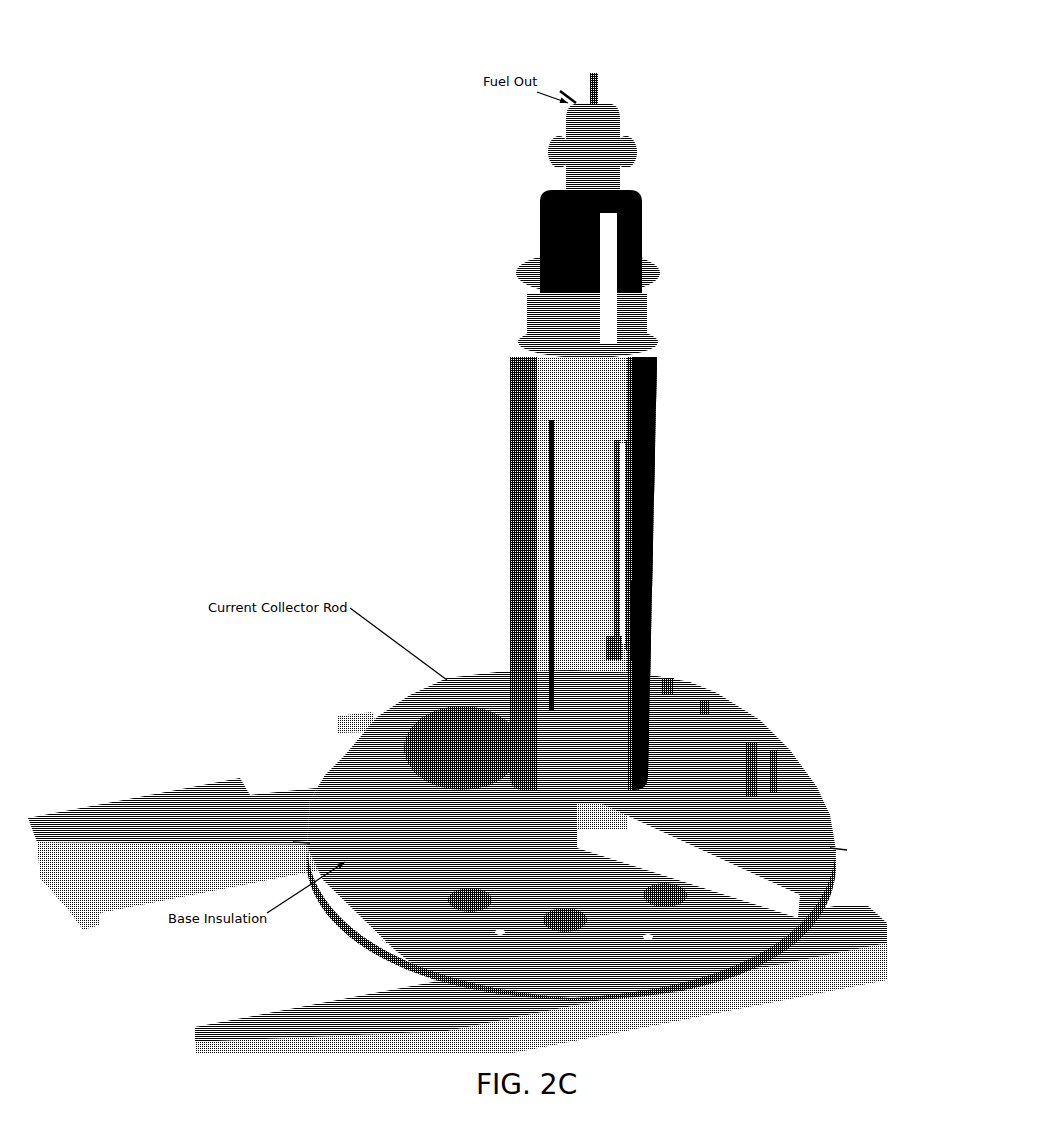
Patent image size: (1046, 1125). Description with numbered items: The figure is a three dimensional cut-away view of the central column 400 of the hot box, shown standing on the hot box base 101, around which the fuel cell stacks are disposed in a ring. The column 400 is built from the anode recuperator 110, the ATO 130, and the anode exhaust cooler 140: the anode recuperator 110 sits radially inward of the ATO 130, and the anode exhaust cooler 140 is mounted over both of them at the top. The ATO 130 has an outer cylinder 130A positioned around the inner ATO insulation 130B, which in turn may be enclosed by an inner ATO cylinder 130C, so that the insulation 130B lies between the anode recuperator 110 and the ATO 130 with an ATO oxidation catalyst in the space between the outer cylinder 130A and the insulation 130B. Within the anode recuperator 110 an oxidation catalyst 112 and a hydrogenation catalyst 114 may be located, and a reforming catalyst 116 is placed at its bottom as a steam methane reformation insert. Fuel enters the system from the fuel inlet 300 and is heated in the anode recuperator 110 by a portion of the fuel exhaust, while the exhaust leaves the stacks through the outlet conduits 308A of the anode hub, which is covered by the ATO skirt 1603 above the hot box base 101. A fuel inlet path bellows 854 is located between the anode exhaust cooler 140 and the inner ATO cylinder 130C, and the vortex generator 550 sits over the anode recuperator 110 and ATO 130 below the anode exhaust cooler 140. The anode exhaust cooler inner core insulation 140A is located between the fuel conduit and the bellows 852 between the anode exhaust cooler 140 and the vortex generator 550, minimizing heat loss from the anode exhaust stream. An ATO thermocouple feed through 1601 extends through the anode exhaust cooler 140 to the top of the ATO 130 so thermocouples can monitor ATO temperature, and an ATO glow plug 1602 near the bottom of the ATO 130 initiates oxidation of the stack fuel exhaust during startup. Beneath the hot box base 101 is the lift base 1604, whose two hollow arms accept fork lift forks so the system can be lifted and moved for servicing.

The central column 400 is at (647, 57).
The ATO thermocouple feed through 1601 is at (597, 82).
The fuel inlet 300 is at (562, 145).
The anode exhaust cooler 140 is at (640, 233).
The bellows 852 is at (525, 308).
The anode exhaust cooler inner core insulation 140A is at (612, 312).
The fuel inlet path bellows 854 is at (607, 370).
The vortex generator 550 is at (520, 345).
The outer cylinder 130A is at (515, 492).
The inner ATO insulation 130B is at (650, 445).
The inner ATO cylinder 130C is at (578, 543).
The anode recuperator 110 is at (627, 525).
The ATO 130 is at (647, 620).
The oxidation catalyst 112 is at (702, 640).
The hydrogenation catalyst 114 is at (615, 648).
The reforming catalyst 116 is at (615, 695).
The ATO skirt 1603 is at (428, 723).
The ATO glow plug 1602 is at (340, 717).
The lift base 1604 is at (173, 793).
The hot box base 101 is at (357, 777).
The outlet conduits 308A is at (647, 790).